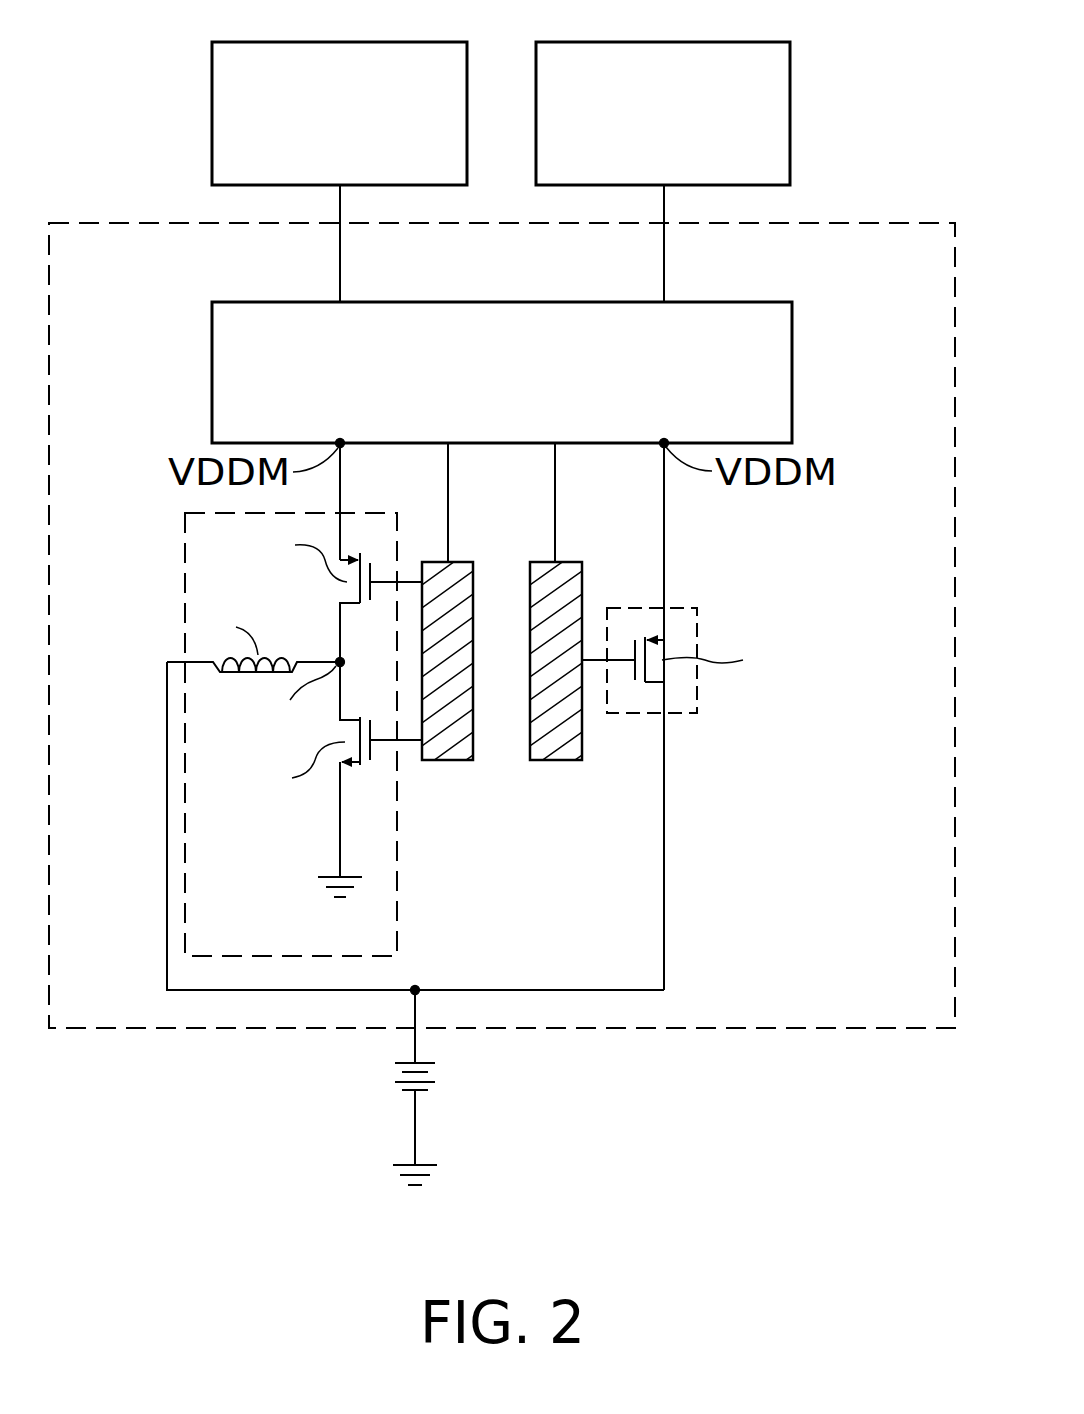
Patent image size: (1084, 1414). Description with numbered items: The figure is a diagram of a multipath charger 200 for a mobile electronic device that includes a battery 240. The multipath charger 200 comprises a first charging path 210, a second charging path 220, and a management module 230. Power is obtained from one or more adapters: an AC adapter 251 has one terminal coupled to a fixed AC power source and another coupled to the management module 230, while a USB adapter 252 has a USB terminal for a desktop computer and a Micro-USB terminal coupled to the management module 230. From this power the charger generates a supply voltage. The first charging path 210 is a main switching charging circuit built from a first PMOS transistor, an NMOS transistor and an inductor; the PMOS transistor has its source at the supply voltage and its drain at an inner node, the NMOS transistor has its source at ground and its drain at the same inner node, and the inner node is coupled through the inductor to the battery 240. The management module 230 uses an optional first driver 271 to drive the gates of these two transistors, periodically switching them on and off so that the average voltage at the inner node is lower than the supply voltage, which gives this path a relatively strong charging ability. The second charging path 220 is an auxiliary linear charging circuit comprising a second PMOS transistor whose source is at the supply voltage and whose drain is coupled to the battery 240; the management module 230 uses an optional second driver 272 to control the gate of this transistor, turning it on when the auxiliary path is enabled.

The multipath charger 200 is at (49, 223).
The first charging path 210 is at (185, 549).
The second charging path 220 is at (697, 612).
The management module 230 is at (212, 302).
The battery 240 is at (437, 1075).
The AC adapter 251 is at (212, 42).
The USB adapter 252 is at (536, 42).
The first driver 271 is at (448, 762).
The second driver 272 is at (555, 762).